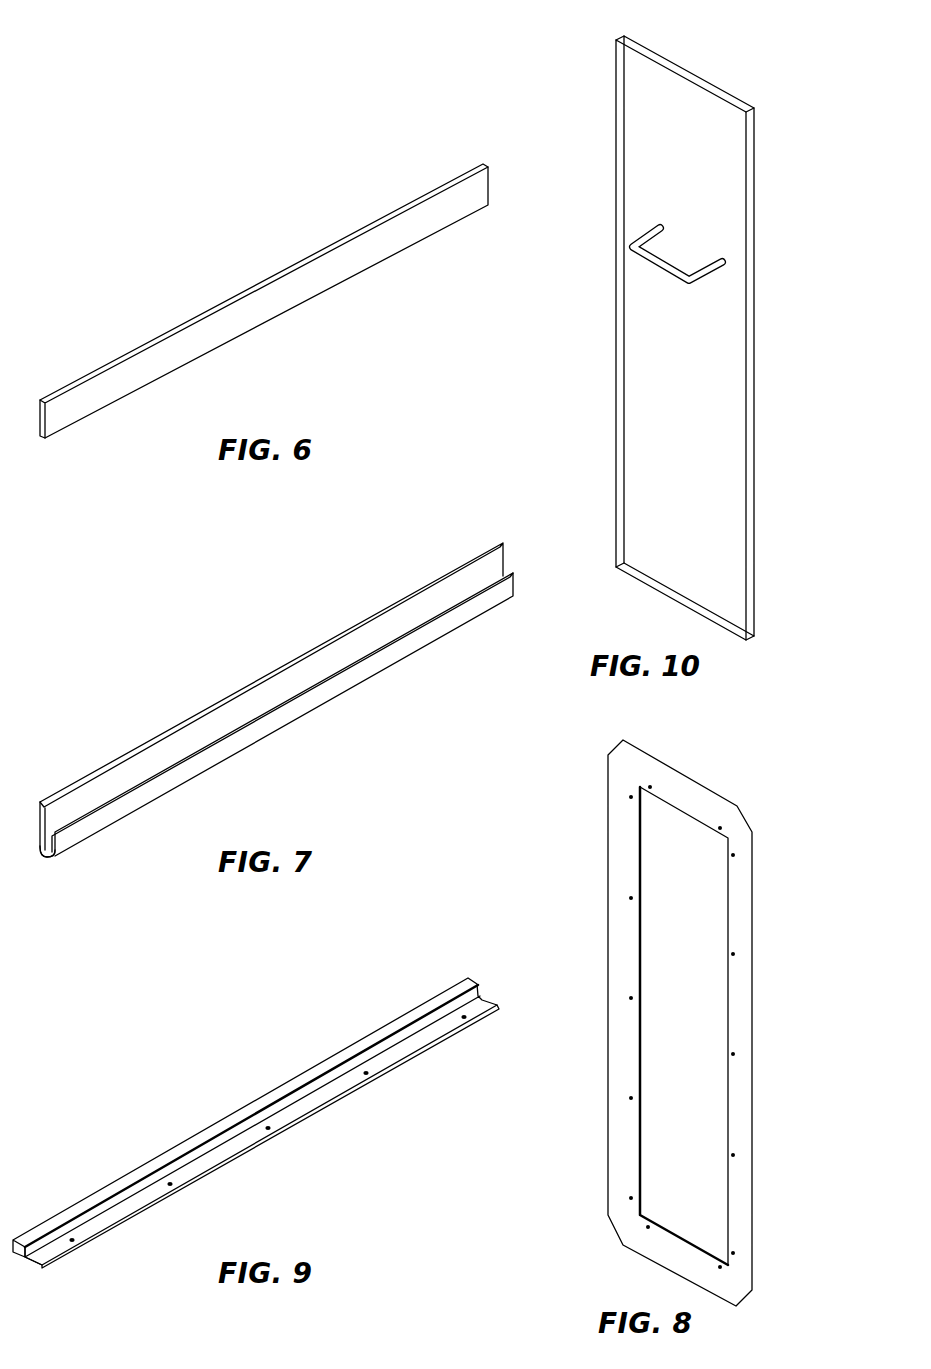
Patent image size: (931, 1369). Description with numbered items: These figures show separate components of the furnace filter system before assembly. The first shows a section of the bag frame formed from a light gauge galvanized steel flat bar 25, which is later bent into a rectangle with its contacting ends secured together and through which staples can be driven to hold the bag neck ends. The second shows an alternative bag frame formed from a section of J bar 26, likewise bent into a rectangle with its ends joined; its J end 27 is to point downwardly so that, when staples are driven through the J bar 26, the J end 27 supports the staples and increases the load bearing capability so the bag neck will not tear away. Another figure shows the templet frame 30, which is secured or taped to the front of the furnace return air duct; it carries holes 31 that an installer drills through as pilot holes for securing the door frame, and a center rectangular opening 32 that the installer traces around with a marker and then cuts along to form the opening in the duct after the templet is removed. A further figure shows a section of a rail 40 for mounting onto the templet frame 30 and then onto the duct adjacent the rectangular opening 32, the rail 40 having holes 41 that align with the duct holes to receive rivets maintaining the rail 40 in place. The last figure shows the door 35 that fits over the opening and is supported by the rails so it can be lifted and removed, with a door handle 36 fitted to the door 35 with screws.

In FIG. 6, the flat bar 25 is at (292, 296).
In FIG. 7, the J bar 26 is at (317, 700).
In FIG. 7, the J end 27 is at (45, 858).
In FIG. 8, the templet frame 30 is at (698, 800).
In FIG. 8, the holes 31 is at (733, 953).
In FIG. 8, the rectangular opening 32 is at (700, 1048).
In FIG. 10, the door 35 is at (694, 453).
In FIG. 10, the door handle 36 is at (673, 283).
In FIG. 9, the rail 40 is at (290, 1087).
In FIG. 9, the holes 41 is at (370, 1080).